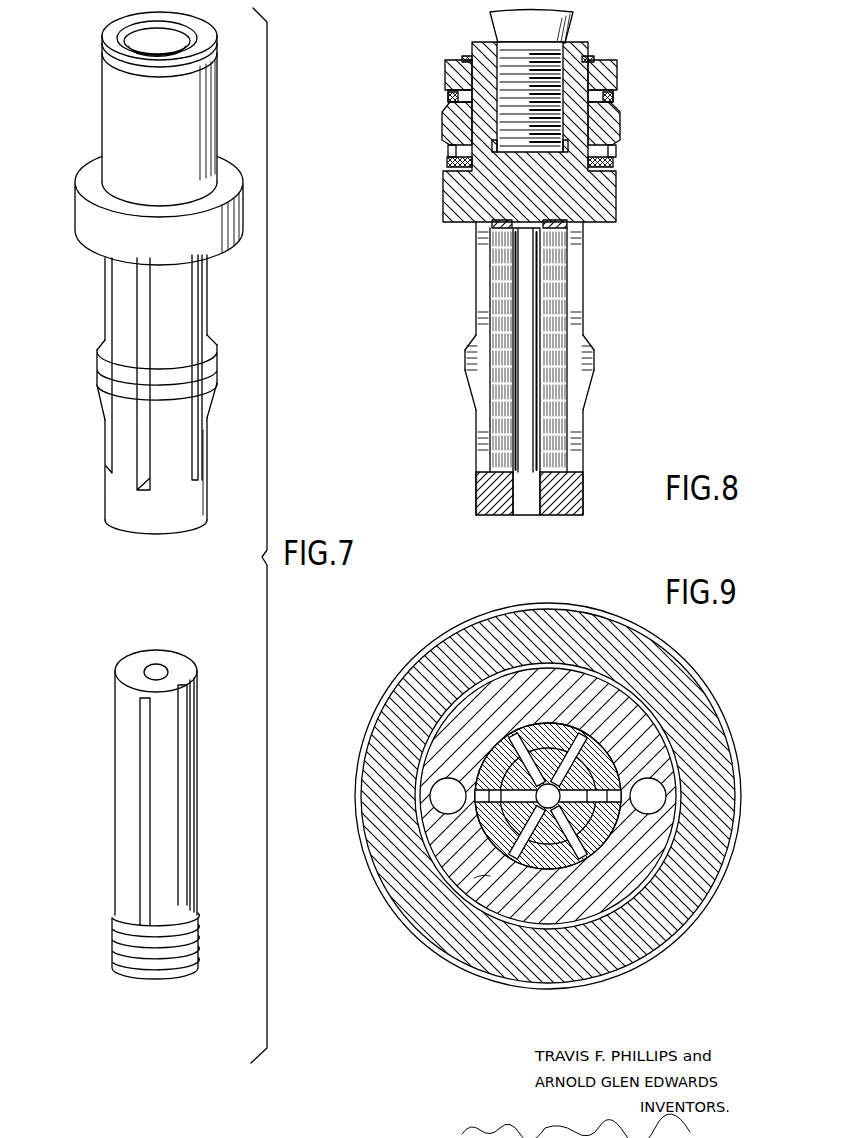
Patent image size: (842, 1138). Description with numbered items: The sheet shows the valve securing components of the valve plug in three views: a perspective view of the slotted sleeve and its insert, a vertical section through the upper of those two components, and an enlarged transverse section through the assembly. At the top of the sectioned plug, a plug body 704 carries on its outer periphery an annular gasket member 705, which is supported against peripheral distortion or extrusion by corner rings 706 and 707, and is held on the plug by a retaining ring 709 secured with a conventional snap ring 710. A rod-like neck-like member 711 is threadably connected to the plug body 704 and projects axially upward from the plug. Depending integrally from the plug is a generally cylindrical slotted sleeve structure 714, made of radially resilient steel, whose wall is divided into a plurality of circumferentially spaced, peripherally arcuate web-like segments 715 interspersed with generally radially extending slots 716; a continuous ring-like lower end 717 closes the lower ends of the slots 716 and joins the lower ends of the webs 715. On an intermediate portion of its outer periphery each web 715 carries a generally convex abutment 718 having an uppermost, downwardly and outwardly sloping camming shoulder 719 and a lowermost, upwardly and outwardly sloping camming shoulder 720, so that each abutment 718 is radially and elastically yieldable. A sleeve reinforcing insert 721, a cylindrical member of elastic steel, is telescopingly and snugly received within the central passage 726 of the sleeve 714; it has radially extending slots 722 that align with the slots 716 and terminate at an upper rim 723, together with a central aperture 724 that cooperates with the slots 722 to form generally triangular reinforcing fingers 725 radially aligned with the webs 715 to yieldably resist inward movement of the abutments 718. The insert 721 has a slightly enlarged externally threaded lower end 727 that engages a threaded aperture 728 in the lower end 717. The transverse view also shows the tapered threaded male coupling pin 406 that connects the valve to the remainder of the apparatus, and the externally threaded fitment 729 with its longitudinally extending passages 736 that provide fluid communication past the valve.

In FIG. 9, the threaded male coupling pin 406 is at (386, 828).
In FIG. 7, the plug body 704 is at (80, 208).
In FIG. 8, the plug body 704 is at (445, 202).
In FIG. 8, the annular gasket member 705 is at (618, 135).
In FIG. 8, the corner ring 706 is at (447, 162).
In FIG. 8, the corner ring 707 is at (448, 92).
In FIG. 8, the retaining ring 709 is at (617, 78).
In FIG. 8, the snap ring 710 is at (587, 60).
In FIG. 8, the neck-like member 711 is at (570, 32).
In FIG. 7, the slotted sleeve structure 714 is at (105, 303).
In FIG. 7, the web-like segment 715 is at (115, 445).
In FIG. 8, the web-like segment 715 is at (583, 262).
In FIG. 9, the web-like segment 715 is at (625, 885).
In FIG. 7, the radially extending slot 716 is at (110, 285).
In FIG. 9, the radially extending slot 716 is at (600, 833).
In FIG. 7, the ring-like lower end 717 is at (110, 497).
In FIG. 8, the ring-like lower end 717 is at (476, 487).
In FIG. 7, the convex abutment 718 is at (218, 362).
In FIG. 8, the convex abutment 718 is at (594, 358).
In FIG. 7, the upper camming shoulder 719 is at (100, 340).
In FIG. 8, the upper camming shoulder 719 is at (588, 342).
In FIG. 7, the lower camming shoulder 720 is at (102, 386).
In FIG. 8, the lower camming shoulder 720 is at (587, 388).
In FIG. 7, the sleeve reinforcing insert 721 is at (167, 765).
In FIG. 8, the sleeve reinforcing insert 721 is at (552, 433).
In FIG. 7, the radially extending slot 722 is at (183, 863).
In FIG. 9, the radially extending slot 722 is at (587, 783).
In FIG. 7, the upper rim 723 is at (197, 683).
In FIG. 7, the central aperture 724 is at (158, 666).
In FIG. 8, the central aperture 724 is at (528, 503).
In FIG. 9, the central aperture 724 is at (546, 803).
In FIG. 7, the reinforcing finger 725 is at (172, 810).
In FIG. 9, the reinforcing finger 725 is at (595, 820).
In FIG. 8, the central passage 726 is at (570, 298).
In FIG. 7, the externally threaded lower end 727 is at (200, 938).
In FIG. 8, the externally threaded lower end 727 is at (552, 503).
In FIG. 8, the threaded aperture 728 is at (583, 490).
In FIG. 9, the externally threaded fitment 729 is at (484, 880).
In FIG. 9, the longitudinally extending passage 736 is at (659, 799).